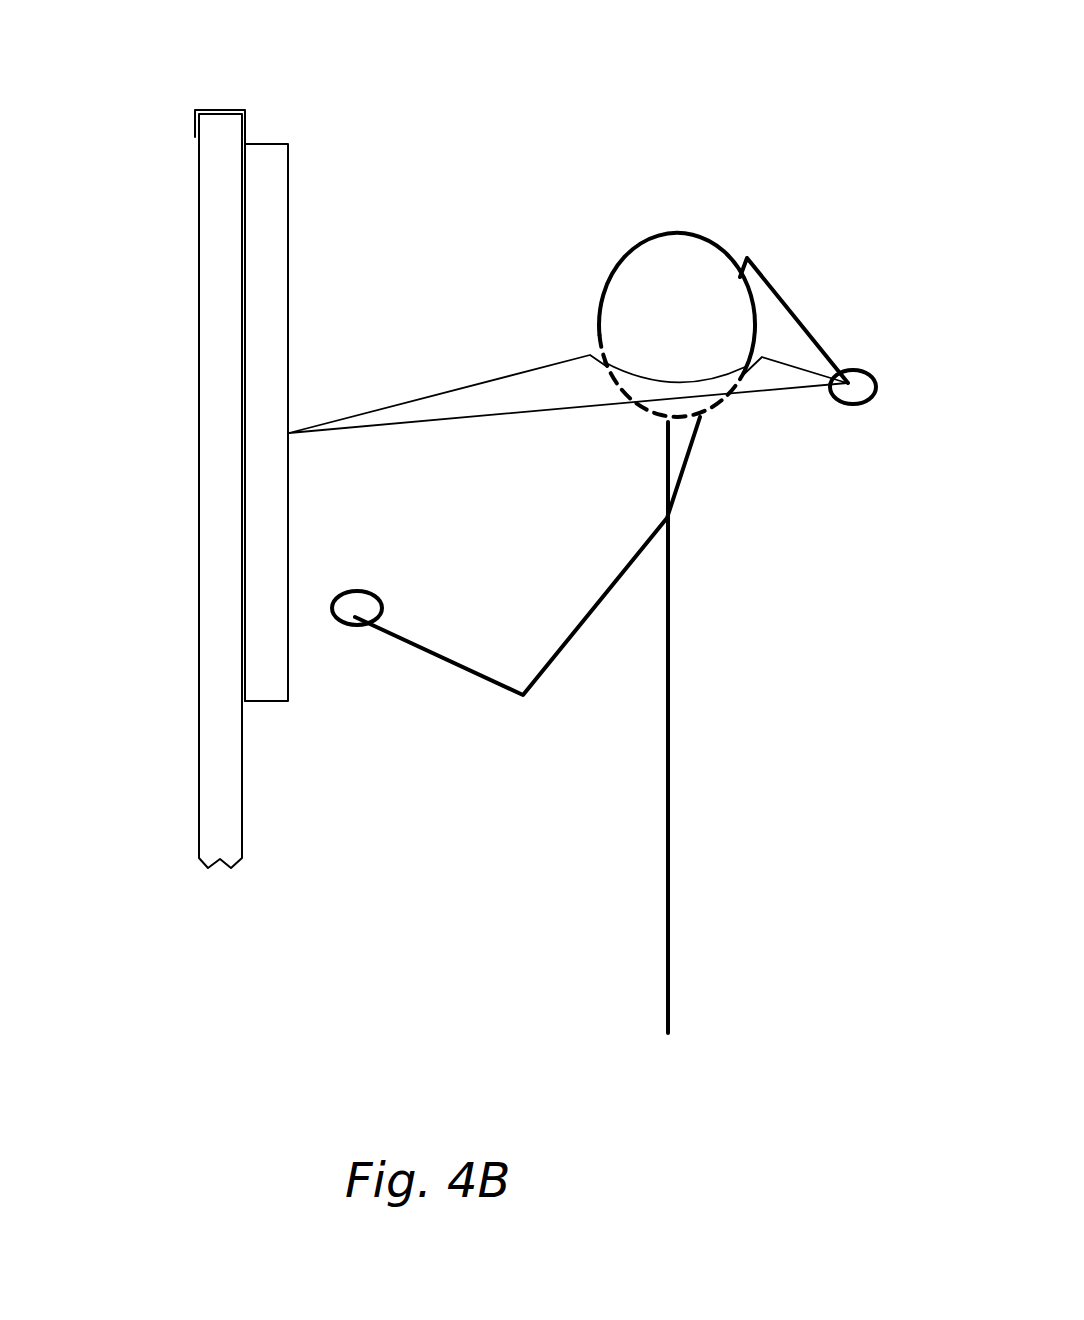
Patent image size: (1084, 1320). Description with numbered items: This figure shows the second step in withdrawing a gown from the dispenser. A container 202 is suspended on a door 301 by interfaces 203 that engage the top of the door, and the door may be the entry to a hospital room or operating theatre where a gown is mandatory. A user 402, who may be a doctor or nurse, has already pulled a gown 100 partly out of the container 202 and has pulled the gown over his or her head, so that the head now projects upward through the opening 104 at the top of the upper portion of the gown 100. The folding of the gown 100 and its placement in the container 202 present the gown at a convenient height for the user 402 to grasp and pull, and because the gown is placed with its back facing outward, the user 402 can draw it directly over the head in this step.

The gown 100 is at (533, 392).
The opening 104 is at (673, 382).
The container 202 is at (268, 144).
The interfaces 203 is at (231, 110).
The door 301 is at (205, 310).
The user 402 is at (745, 477).